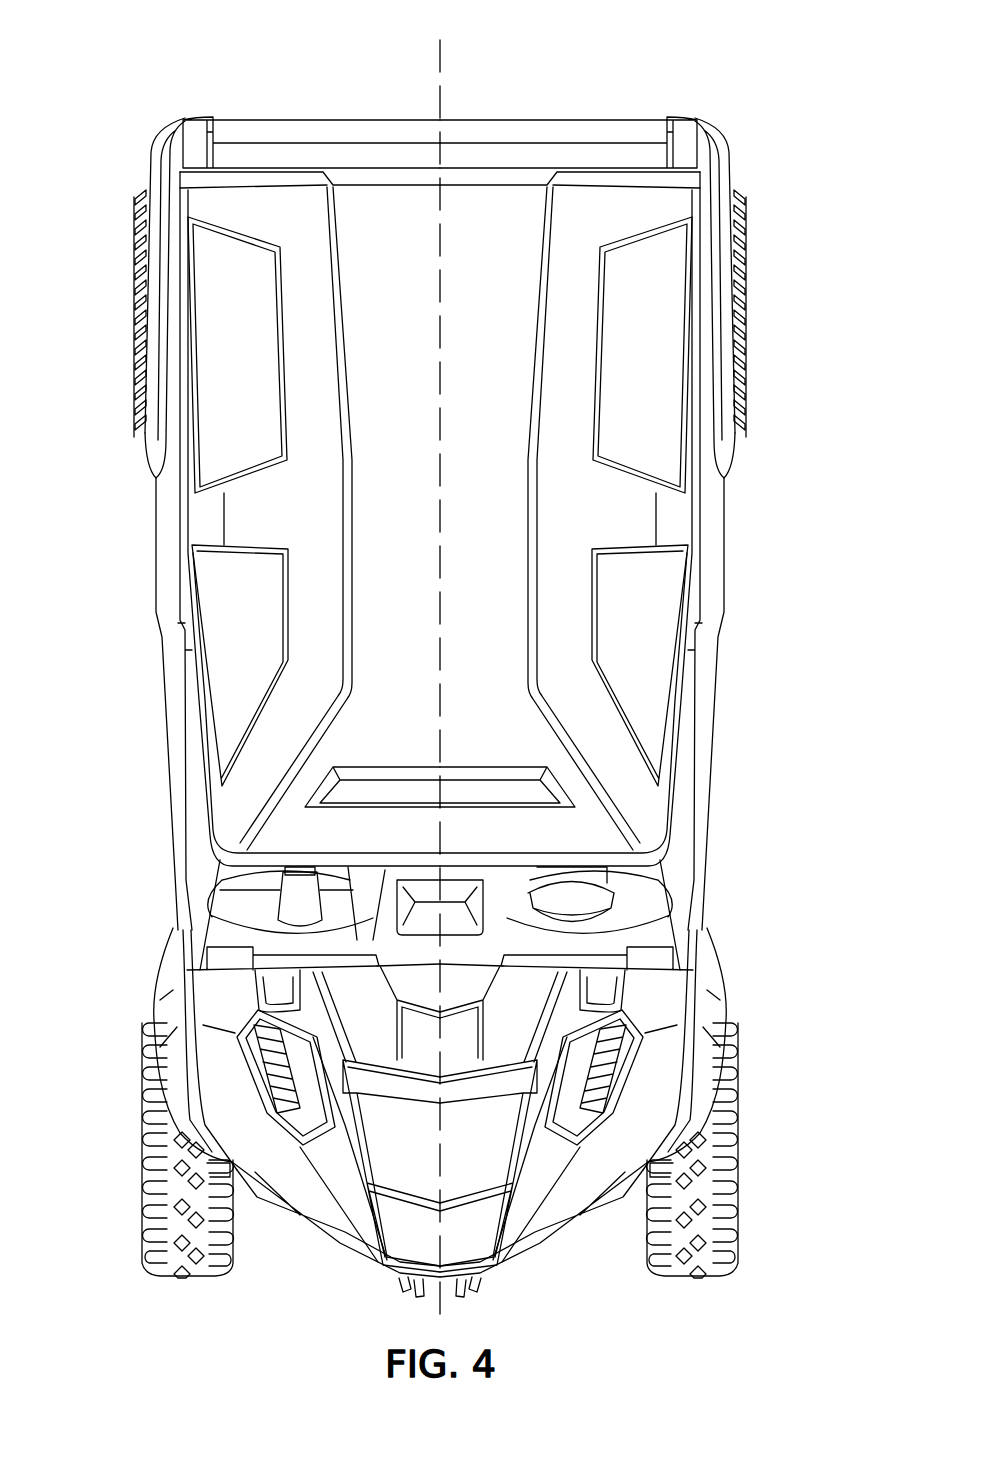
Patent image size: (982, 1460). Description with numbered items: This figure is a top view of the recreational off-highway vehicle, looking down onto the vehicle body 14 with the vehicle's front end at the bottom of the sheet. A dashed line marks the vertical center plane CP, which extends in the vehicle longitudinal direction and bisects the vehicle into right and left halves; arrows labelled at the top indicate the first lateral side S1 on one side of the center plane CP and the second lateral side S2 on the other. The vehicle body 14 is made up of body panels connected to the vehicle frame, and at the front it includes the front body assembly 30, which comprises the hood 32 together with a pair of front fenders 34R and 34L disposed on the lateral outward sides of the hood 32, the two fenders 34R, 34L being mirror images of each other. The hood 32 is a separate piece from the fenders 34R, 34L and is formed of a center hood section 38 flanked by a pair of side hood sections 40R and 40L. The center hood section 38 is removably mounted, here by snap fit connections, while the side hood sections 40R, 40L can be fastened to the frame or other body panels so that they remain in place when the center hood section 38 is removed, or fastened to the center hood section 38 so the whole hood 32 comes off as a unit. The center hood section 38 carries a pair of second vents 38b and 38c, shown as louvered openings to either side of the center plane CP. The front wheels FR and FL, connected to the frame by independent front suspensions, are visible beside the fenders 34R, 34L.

The vehicle body 14 is at (722, 159).
The front body assembly 30 is at (497, 1319).
The hood 32 is at (565, 1235).
The front fender 34R is at (146, 1001).
The front fender 34L is at (737, 1001).
The center hood section 38 is at (357, 997).
The second vent 38b is at (592, 1090).
The second vent 38c is at (282, 1088).
The side hood section 40R is at (218, 998).
The side hood section 40L is at (661, 998).
The front wheel FR is at (140, 1215).
The front wheel FL is at (740, 1215).
The vertical center plane CP is at (440, 60).
The first lateral side S1 is at (505, 75).
The second lateral side S2 is at (425, 75).